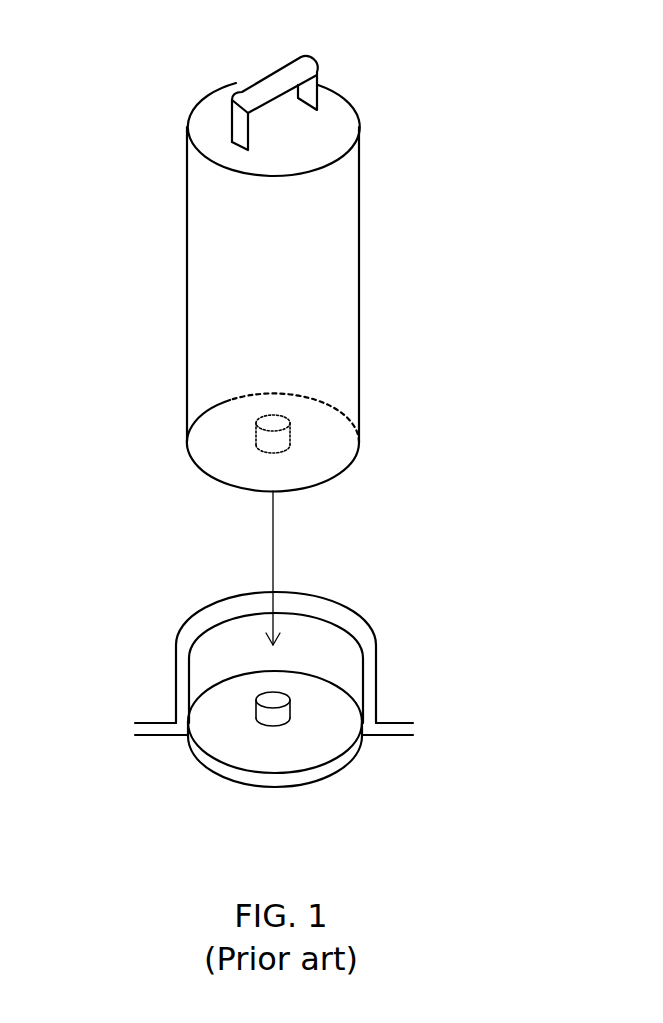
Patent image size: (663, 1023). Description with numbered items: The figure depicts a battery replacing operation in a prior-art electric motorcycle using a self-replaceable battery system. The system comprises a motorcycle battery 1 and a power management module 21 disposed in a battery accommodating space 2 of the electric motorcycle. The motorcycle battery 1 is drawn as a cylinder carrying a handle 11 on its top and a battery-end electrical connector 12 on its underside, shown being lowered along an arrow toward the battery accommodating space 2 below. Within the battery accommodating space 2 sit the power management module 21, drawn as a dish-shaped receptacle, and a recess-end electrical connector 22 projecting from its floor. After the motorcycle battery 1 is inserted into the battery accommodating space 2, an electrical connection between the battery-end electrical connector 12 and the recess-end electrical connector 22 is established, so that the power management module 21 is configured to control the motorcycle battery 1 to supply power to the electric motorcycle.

The motorcycle battery 1 is at (158, 157).
The handle 11 is at (256, 92).
The battery-end electrical connector 12 is at (257, 420).
The battery accommodating space 2 is at (153, 621).
The power management module 21 is at (205, 753).
The recess-end electrical connector 22 is at (278, 723).